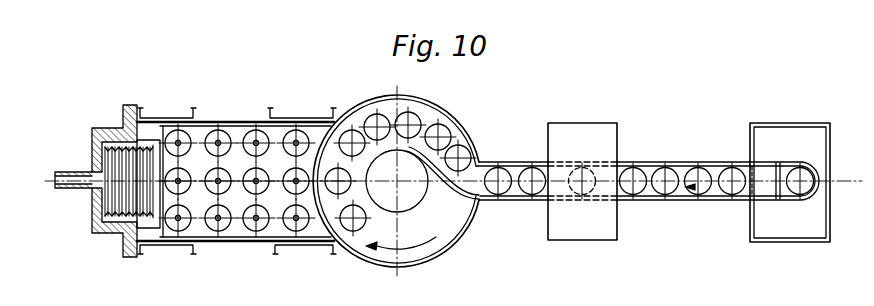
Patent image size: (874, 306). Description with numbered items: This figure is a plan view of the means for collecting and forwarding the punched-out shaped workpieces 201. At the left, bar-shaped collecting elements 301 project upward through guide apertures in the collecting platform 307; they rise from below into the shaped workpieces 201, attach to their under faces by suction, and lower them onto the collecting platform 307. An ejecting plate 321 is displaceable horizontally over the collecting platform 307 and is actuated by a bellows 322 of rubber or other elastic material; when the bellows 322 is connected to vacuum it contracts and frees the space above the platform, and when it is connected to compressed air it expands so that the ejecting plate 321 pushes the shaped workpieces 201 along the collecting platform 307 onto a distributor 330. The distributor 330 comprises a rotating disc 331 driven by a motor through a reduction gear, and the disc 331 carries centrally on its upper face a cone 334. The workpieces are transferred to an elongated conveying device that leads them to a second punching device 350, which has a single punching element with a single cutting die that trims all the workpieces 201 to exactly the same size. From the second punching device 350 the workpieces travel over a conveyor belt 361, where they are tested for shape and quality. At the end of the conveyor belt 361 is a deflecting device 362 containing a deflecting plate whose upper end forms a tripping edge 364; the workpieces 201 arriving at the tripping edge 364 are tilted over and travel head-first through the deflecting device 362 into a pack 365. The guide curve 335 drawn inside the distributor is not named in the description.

The shaped workpiece 201 is at (466, 121).
The collecting element 301 is at (258, 147).
The collecting platform 307 is at (238, 228).
The ejecting plate 321 is at (162, 168).
The bellows 322 is at (113, 171).
The distributor 330 is at (408, 94).
The rotating disc 331 is at (406, 258).
The cone 334 is at (409, 203).
The spiral guide 335 is at (447, 183).
The second punching device 350 is at (625, 132).
The conveyor belt 361 is at (683, 168).
The deflecting device 362 is at (820, 187).
The tripping edge 364 is at (779, 165).
The pack 365 is at (805, 118).